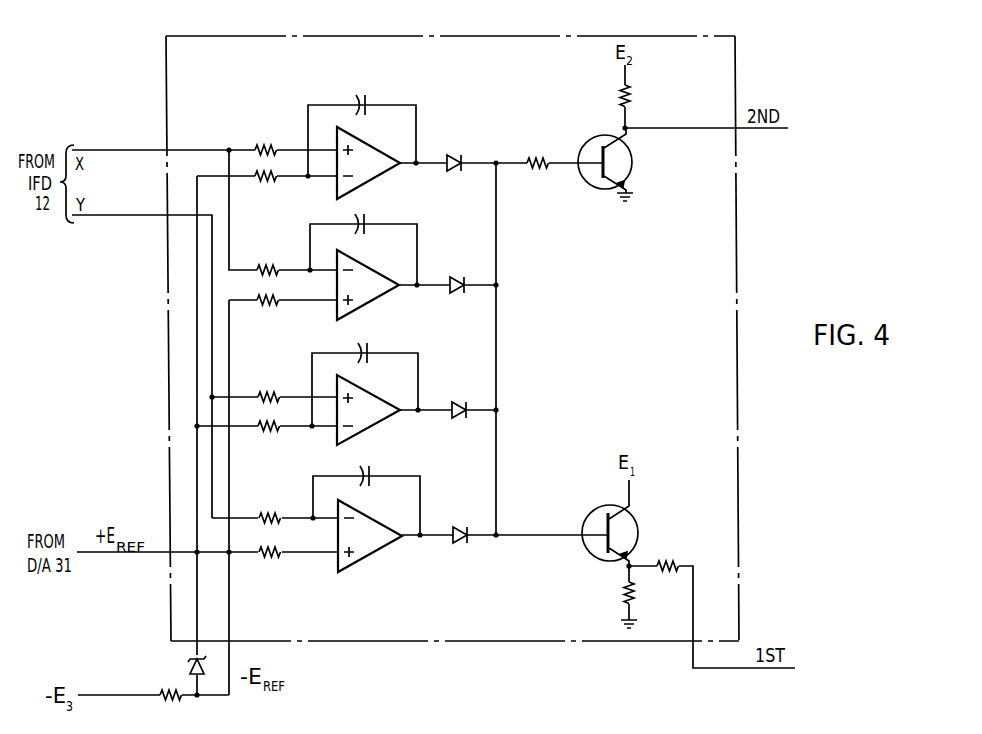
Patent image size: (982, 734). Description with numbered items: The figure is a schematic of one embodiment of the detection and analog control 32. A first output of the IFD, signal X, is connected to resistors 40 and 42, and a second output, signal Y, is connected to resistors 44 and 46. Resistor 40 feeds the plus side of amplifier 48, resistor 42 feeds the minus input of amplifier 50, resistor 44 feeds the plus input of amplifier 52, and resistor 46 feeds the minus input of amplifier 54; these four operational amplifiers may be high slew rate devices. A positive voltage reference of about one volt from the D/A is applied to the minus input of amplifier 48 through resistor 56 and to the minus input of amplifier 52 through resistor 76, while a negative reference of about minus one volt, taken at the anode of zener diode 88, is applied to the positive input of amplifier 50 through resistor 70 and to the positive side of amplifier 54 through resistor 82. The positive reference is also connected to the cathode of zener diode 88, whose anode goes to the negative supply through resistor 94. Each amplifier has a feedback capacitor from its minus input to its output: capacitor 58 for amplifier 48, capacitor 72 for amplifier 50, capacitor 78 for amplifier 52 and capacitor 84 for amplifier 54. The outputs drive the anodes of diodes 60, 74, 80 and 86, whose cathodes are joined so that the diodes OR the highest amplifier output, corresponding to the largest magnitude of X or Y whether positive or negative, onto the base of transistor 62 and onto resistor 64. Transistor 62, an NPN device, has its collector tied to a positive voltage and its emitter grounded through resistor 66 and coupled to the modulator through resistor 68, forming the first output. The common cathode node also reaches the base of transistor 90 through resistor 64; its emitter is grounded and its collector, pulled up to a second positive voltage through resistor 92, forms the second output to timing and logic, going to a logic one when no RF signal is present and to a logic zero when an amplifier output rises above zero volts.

The detection and analog control 32 is at (166, 46).
The resistor 40 is at (260, 143).
The resistor 42 is at (268, 265).
The resistor 44 is at (265, 390).
The resistor 46 is at (272, 512).
The amplifier 48 is at (364, 143).
The amplifier 50 is at (358, 265).
The amplifier 52 is at (362, 390).
The amplifier 54 is at (365, 518).
The resistor 56 is at (265, 183).
The capacitor 58 is at (362, 92).
The diode 60 is at (452, 153).
The transistor 62 is at (597, 515).
The resistor 64 is at (545, 152).
The resistor 66 is at (622, 590).
The resistor 68 is at (665, 565).
The resistor 70 is at (268, 308).
The capacitor 72 is at (365, 220).
The diode 74 is at (452, 275).
The resistor 76 is at (270, 432).
The capacitor 78 is at (368, 345).
The diode 80 is at (460, 400).
The resistor 82 is at (272, 556).
The capacitor 84 is at (367, 478).
The diode 86 is at (460, 527).
The zener diode 88 is at (185, 665).
The transistor 90 is at (598, 135).
The resistor 92 is at (617, 102).
The resistor 94 is at (172, 688).